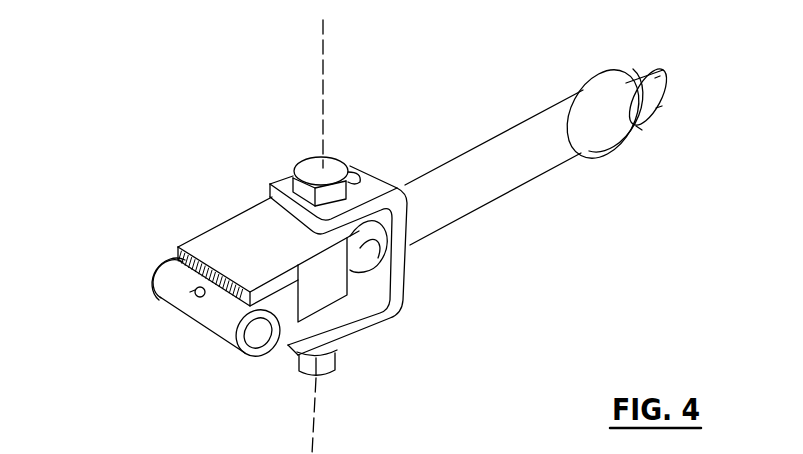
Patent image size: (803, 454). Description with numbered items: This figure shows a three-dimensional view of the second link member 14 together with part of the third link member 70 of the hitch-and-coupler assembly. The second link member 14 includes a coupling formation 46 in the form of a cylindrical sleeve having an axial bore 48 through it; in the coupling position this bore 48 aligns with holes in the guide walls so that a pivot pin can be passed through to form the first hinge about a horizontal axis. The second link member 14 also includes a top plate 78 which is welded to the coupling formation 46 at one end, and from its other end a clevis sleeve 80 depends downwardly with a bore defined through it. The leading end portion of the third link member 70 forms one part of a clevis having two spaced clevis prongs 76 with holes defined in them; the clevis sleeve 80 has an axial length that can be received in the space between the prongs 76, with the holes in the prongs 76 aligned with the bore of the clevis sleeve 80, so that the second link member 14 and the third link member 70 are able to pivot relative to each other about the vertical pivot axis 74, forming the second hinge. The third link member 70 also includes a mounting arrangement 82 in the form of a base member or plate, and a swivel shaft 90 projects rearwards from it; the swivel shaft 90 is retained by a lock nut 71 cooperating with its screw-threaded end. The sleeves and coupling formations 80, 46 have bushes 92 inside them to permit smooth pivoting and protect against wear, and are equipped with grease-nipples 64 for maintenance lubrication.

The second link member 14 is at (212, 222).
The coupling formation 46 is at (191, 327).
The axial bore 48 is at (258, 334).
The grease-nipples 64 is at (195, 294).
The third link member 70 is at (539, 133).
The lock nut 71 is at (612, 72).
The vertical pivot axis 74 is at (326, 84).
The clevis prongs 76 is at (284, 186).
The top plate 78 is at (258, 258).
The clevis sleeve 80 is at (295, 314).
The third link member mounting arrangement 82 is at (333, 172).
The swivel shaft 90 is at (533, 170).
The bushes 92 is at (163, 272).